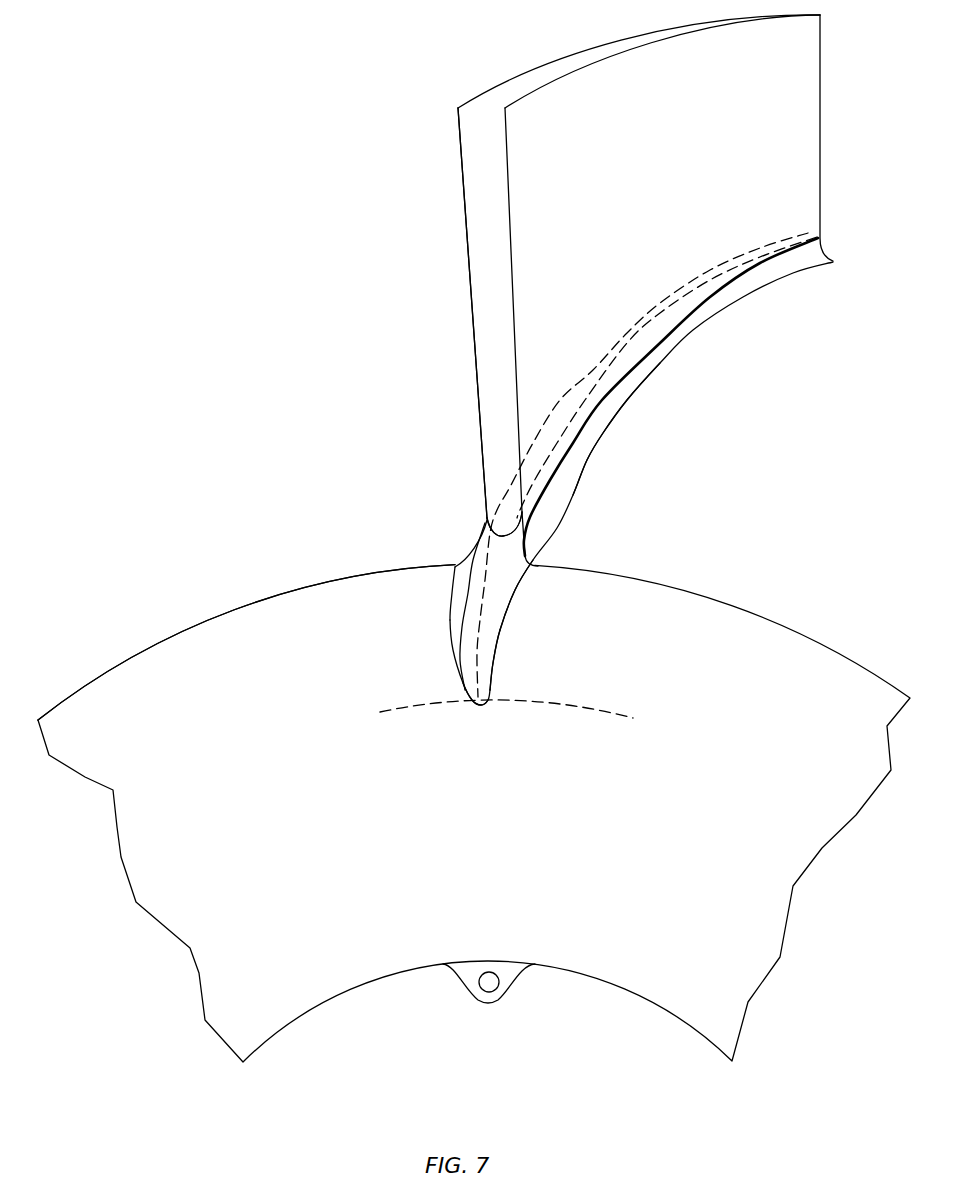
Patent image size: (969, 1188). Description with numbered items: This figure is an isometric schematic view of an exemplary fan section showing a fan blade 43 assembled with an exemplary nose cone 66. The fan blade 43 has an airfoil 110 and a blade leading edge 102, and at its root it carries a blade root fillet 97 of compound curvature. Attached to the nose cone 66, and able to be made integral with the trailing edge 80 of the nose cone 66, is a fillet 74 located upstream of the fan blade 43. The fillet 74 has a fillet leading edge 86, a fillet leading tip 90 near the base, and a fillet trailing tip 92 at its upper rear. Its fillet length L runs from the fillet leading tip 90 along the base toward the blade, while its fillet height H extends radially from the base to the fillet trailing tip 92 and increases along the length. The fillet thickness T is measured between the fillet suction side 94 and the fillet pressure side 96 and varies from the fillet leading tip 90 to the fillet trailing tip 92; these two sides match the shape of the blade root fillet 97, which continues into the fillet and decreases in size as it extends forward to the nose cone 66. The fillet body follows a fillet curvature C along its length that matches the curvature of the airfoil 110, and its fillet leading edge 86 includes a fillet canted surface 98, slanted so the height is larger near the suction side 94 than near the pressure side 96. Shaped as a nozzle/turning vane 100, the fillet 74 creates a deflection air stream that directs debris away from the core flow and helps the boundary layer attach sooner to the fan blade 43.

The fan blade 43 is at (641, 133).
The airfoil 110 is at (718, 204).
The blade leading edge 102 is at (467, 258).
The fillet trailing tip 92 is at (487, 518).
The blade root fillet 97 is at (580, 457).
The fillet leading edge 86 is at (477, 555).
The nozzle/turning vane 100 is at (422, 548).
The fillet 74 is at (455, 582).
The fillet suction side 94 is at (453, 606).
The fillet pressure side 96 is at (506, 593).
The fillet canted surface 98 is at (506, 664).
The fillet leading tip 90 is at (483, 705).
The nose cone 66 is at (427, 935).
The trailing edge 80 is at (185, 617).
The fillet thickness T is at (528, 521).
The fillet height H is at (527, 526).
The fillet length L is at (598, 573).
The fillet curvature C is at (432, 644).